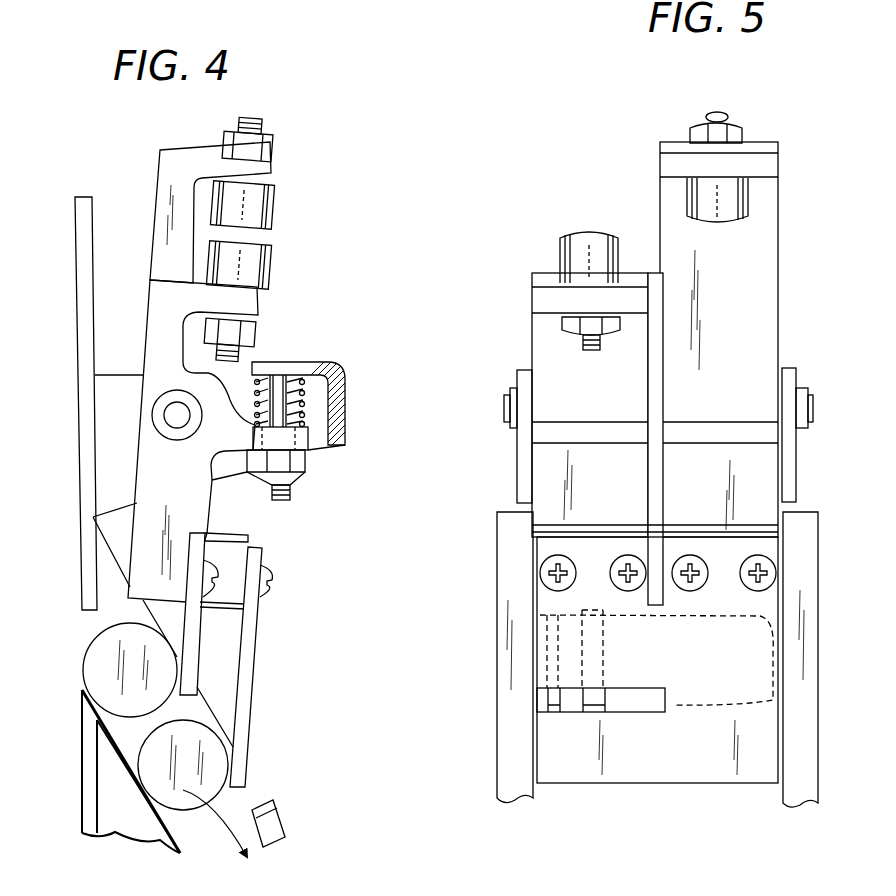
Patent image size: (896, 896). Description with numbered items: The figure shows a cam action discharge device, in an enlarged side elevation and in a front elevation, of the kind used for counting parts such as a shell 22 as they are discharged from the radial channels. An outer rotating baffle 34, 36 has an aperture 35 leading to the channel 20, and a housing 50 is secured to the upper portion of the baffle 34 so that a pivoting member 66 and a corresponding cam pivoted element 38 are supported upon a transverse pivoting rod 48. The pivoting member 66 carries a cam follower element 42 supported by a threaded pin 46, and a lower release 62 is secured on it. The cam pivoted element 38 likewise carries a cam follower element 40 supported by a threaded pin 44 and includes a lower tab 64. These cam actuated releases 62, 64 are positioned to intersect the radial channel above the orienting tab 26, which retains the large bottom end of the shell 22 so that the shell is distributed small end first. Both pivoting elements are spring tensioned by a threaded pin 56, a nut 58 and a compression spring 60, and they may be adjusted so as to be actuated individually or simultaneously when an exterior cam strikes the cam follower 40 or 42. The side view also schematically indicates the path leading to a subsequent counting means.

In FIG. 4, the radial chute 20 is at (177, 828).
In FIG. 5, the shell 22 is at (537, 698).
In FIG. 4, the orienting tab 26 is at (265, 806).
In FIG. 4, the outer rotating baffle 34 is at (78, 457).
In FIG. 4, the aperture 35 is at (88, 621).
In FIG. 4, the outer rotating baffle 36 is at (80, 756).
In FIG. 4, the cam pivoted element 38 is at (160, 178).
In FIG. 5, the cam pivoted element 38 is at (770, 215).
In FIG. 4, the cam follower element 40 is at (272, 201).
In FIG. 5, the cam follower element 40 is at (752, 206).
In FIG. 4, the cam follower element 42 is at (270, 263).
In FIG. 5, the cam follower element 42 is at (565, 252).
In FIG. 4, the threaded pin 44 is at (258, 124).
In FIG. 5, the threaded pin 44 is at (722, 112).
In FIG. 4, the threaded pin 46 is at (250, 358).
In FIG. 5, the threaded pin 46 is at (590, 351).
In FIG. 4, the transverse pivoting rod 48 is at (170, 400).
In FIG. 5, the transverse pivoting rod 48 is at (503, 410).
In FIG. 4, the housing 50 is at (254, 403).
In FIG. 4, the threaded pin 56 is at (290, 492).
In FIG. 4, the nut 58 is at (300, 462).
In FIG. 4, the compression spring 60 is at (318, 405).
In FIG. 4, the cam actuated release 62 is at (195, 551).
In FIG. 5, the cam actuated release 62 is at (535, 595).
In FIG. 4, the lower tab 64 is at (250, 631).
In FIG. 5, the lower tab 64 is at (767, 737).
In FIG. 4, the pivoting member 66 is at (150, 298).
In FIG. 5, the pivoting member 66 is at (535, 300).